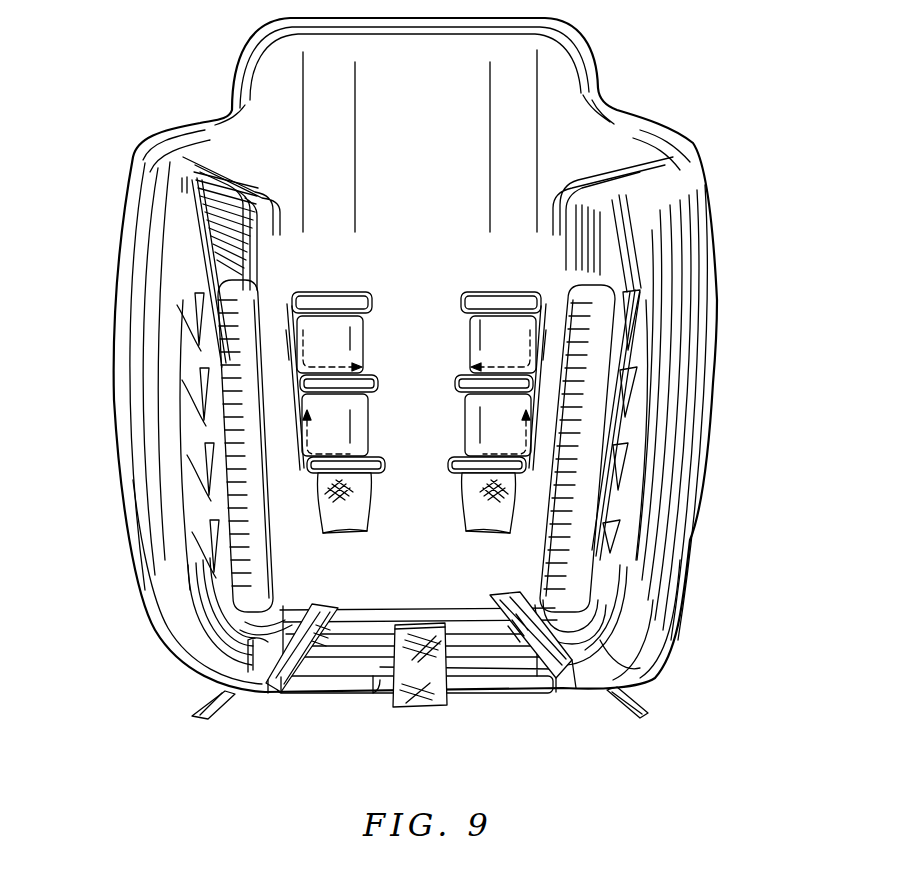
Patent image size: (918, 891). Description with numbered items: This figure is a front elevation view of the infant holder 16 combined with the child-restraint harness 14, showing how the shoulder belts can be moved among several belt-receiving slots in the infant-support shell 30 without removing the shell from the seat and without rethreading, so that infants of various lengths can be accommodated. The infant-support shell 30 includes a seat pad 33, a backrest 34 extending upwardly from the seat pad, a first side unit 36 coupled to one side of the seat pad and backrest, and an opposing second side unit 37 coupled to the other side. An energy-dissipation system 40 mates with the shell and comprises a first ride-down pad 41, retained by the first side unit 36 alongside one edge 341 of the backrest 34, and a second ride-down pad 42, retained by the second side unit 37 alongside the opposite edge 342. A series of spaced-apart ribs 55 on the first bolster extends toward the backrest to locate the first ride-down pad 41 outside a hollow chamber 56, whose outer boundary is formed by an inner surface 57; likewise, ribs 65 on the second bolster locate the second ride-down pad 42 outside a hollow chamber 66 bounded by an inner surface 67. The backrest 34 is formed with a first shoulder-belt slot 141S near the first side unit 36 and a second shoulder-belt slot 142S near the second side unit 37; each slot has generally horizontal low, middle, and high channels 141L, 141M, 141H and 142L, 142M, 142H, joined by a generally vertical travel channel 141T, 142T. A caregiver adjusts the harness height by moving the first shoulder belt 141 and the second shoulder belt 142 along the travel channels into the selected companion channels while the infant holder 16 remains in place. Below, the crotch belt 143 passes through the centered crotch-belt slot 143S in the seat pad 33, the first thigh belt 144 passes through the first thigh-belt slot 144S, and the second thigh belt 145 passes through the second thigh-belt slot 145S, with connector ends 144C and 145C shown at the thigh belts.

The infant holder 16 is at (618, 97).
The infant-support shell 30 is at (228, 97).
The backrest 34 is at (515, 208).
The first side unit 36 is at (110, 243).
The second side unit 37 is at (727, 243).
The energy-dissipation system 40 is at (583, 281).
The first ride-down pad 41 is at (237, 417).
The second ride-down pad 42 is at (590, 360).
The ribs 55 is at (197, 313).
The hollow chamber 56 is at (225, 226).
The inner surface 57 is at (226, 580).
The ribs 65 is at (632, 373).
The hollow chamber 66 is at (620, 240).
The inner surface 67 is at (590, 562).
The edge of backrest 341 is at (283, 538).
The opposite edge of backrest 342 is at (595, 520).
The child-restraint harness 14 is at (428, 619).
The first shoulder belt 141 is at (411, 539).
The second shoulder belt 142 is at (463, 498).
The first shoulder-belt slot 141S is at (310, 292).
The second shoulder-belt slot 142S is at (493, 296).
The high channel 141H is at (360, 293).
The high channel 142H is at (482, 296).
The middle channel 141M is at (378, 383).
The middle channel 142M is at (437, 382).
The low channel 141L is at (360, 458).
The low channel 142L is at (433, 458).
The travel channel 141T is at (295, 357).
The travel channel 142T is at (540, 430).
The crotch belt 143 is at (437, 737).
The crotch-belt slot 143S is at (381, 697).
The first thigh belt 144 is at (405, 565).
The first thigh-belt slot 144S is at (247, 653).
The left lap strap connector 144C is at (270, 683).
The second thigh belt 145 is at (428, 562).
The second thigh-belt slot 145S is at (605, 662).
The right lap strap connector 145C is at (560, 693).
The seat pad 33 is at (490, 663).